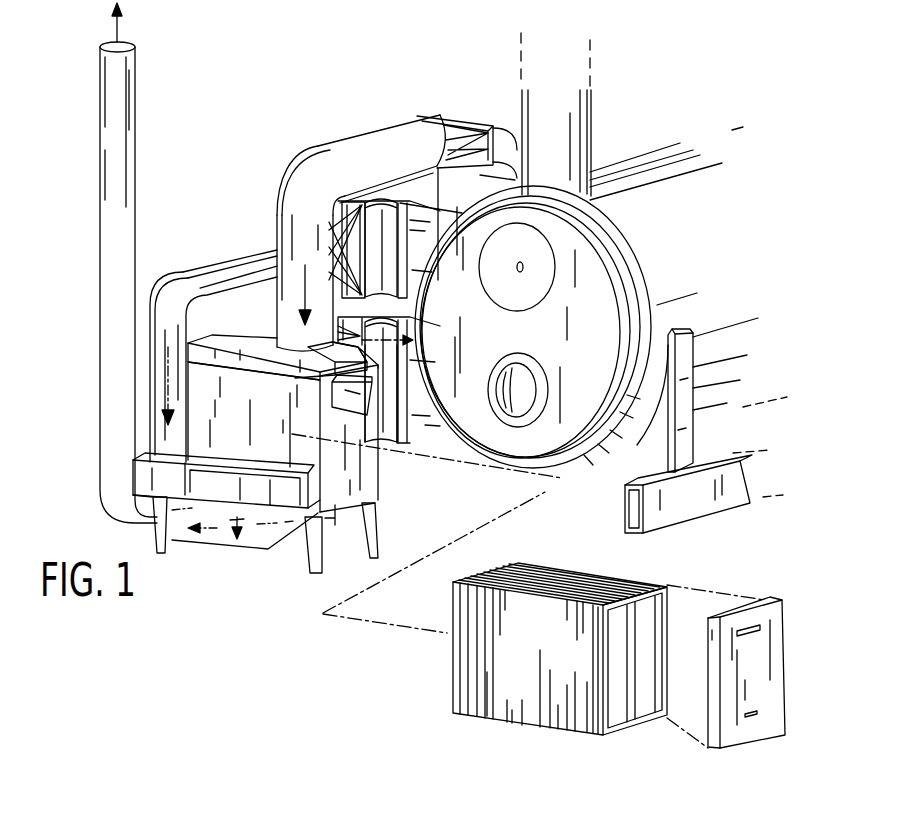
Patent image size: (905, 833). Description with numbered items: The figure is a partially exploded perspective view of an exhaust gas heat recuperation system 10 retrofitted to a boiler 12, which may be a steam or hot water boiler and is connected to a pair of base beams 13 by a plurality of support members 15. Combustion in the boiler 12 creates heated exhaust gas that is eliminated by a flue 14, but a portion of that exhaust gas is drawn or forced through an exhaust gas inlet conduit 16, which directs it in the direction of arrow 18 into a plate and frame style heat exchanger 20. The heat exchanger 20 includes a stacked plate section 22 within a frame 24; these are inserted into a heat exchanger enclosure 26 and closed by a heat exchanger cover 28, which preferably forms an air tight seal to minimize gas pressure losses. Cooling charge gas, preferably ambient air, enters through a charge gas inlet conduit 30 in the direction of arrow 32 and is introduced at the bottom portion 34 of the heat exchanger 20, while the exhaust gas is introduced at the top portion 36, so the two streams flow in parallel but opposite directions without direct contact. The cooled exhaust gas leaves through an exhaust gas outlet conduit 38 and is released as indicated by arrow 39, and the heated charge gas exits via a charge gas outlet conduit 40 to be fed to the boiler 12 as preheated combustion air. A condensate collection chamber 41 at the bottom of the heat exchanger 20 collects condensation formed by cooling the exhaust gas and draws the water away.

The exhaust gas heat recuperation system 10 is at (441, 85).
The boiler 12 is at (695, 213).
The base beams 13 is at (742, 483).
The flue 14 is at (592, 144).
The support members 15 is at (653, 442).
The exhaust gas inlet conduit 16 is at (373, 135).
The arrow 18 is at (280, 285).
The heat exchanger 20 is at (234, 322).
The stacked plate section 22 is at (553, 571).
The frame 24 is at (633, 620).
The heat exchanger enclosure 26 is at (242, 440).
The heat exchanger cover 28 is at (762, 723).
The charge gas inlet conduit 30 is at (163, 293).
The arrow 32 is at (167, 378).
The bottom portion 34 is at (250, 492).
The top portion 36 is at (210, 340).
The exhaust gas outlet conduit 38 is at (100, 430).
The arrow 39 is at (118, 29).
The charge gas outlet conduit 40 is at (385, 434).
The condensate collection chamber 41 is at (278, 510).